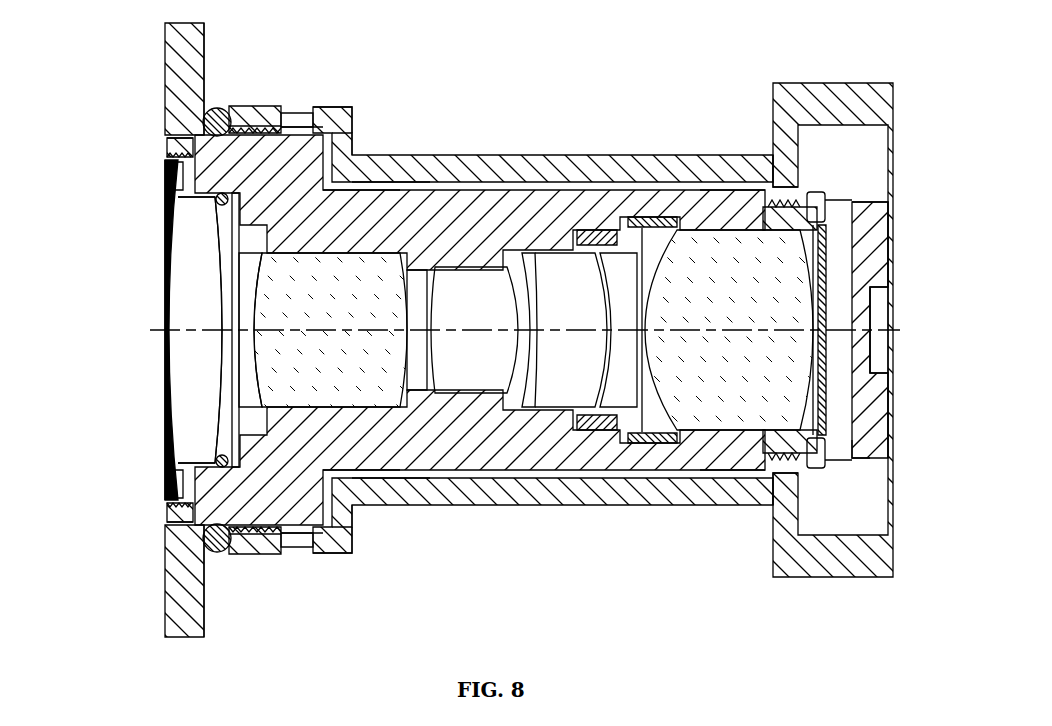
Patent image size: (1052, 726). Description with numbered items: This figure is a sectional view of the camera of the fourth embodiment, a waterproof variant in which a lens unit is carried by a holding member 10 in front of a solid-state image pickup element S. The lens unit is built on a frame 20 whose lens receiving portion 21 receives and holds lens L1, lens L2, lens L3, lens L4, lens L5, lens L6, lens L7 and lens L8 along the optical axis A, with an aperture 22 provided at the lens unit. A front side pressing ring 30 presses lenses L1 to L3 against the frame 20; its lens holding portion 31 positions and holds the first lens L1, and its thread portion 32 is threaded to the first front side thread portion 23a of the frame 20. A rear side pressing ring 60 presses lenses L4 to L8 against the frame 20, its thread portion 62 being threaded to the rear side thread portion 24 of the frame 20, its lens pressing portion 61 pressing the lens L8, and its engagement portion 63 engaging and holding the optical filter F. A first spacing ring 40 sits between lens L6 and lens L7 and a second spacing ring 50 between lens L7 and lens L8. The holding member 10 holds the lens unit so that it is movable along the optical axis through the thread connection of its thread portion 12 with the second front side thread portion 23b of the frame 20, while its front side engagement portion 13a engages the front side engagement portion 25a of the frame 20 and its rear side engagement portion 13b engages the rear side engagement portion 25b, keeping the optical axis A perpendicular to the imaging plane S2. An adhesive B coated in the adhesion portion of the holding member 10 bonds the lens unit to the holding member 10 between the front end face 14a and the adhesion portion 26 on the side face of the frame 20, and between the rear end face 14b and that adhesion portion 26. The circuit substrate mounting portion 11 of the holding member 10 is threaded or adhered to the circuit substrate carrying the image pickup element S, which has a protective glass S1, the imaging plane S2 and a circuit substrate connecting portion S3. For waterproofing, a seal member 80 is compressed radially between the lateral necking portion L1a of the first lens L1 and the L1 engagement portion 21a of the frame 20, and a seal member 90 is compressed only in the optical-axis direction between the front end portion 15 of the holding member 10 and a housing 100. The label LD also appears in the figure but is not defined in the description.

The housing 100 is at (165, 62).
The front end portion 15 is at (203, 113).
The first front side thread portion 23a is at (170, 145).
The thread portion 32 is at (167, 152).
The front side pressing ring 30 is at (167, 158).
The lens holding portion 31 is at (185, 192).
The seal member 80 is at (218, 202).
The lens receiving portion 21 is at (215, 293).
The aperture 22 is at (423, 283).
The optical axis A is at (150, 328).
The L1 engagement portion 21a is at (165, 437).
The lens diameter LD is at (130, 427).
The first lens L1 is at (205, 465).
The lateral necking portion L1a is at (220, 443).
The lens L2 is at (247, 410).
The lens L3 is at (360, 395).
The lens L4 is at (475, 393).
The lens L5 is at (528, 405).
The lens L6 is at (560, 405).
The lens L7 is at (627, 407).
The lens L8 is at (717, 403).
The seal member 90 is at (217, 107).
The second front side thread portion 23b is at (248, 110).
The thread portion 12 is at (268, 122).
The front end face 14a is at (285, 115).
The adhesive B is at (298, 113).
The rear end face 14b is at (318, 115).
The adhesion portion 26 is at (342, 110).
The front side engagement portion 25a is at (357, 183).
The front side engagement portion 13a is at (383, 185).
The frame 20 is at (495, 190).
The holding member 10 is at (573, 155).
The first spacing ring 40 is at (603, 238).
The second spacing ring 50 is at (655, 236).
The lens pressing portion 61 is at (765, 207).
The rear side engagement portion 25b is at (768, 183).
The rear side thread portion 24 is at (783, 203).
The rear side engagement portion 13b is at (797, 180).
The circuit substrate mounting portion 11 is at (893, 107).
The rear side pressing ring 60 is at (822, 192).
The thread portion 62 is at (827, 203).
The engagement portion 63 is at (823, 222).
The circuit substrate connecting portion S3 is at (893, 353).
The imaging plane S2 is at (870, 397).
The solid-state image pickup element S is at (870, 460).
The protective glass S1 is at (853, 455).
The optical filter F is at (773, 508).